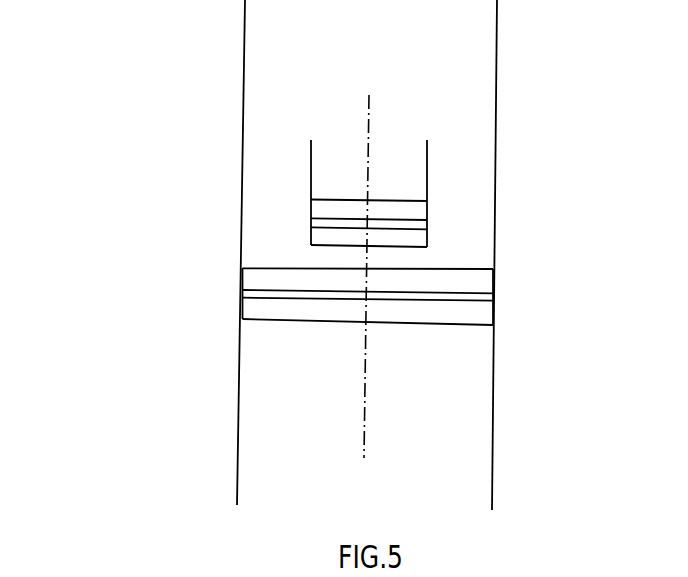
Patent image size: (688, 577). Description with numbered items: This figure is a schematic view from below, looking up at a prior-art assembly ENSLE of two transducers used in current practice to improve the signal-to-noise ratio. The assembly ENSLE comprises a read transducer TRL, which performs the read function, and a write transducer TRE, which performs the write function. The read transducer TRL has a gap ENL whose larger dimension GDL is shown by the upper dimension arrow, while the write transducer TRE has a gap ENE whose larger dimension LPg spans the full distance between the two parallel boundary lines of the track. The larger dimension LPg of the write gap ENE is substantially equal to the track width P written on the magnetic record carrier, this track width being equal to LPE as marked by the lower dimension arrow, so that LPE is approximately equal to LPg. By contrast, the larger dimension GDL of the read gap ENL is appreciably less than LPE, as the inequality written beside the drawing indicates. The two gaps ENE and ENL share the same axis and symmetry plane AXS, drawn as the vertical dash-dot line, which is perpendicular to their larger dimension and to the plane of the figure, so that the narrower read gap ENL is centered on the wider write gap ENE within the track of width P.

The track width P is at (497, 31).
The axis and symmetry plane AXS is at (370, 98).
The read transducer TRL is at (311, 222).
The gap of the read transducer ENL is at (408, 229).
The larger dimension of the read gap GDL is at (427, 150).
The write transducer TRE is at (243, 305).
The gap of the write transducer ENE is at (467, 302).
The larger dimension of the write gap LPg is at (193, 295).
The assembly of two transducers ENSLE is at (162, 266).
The track width on the carrier LPE is at (492, 493).